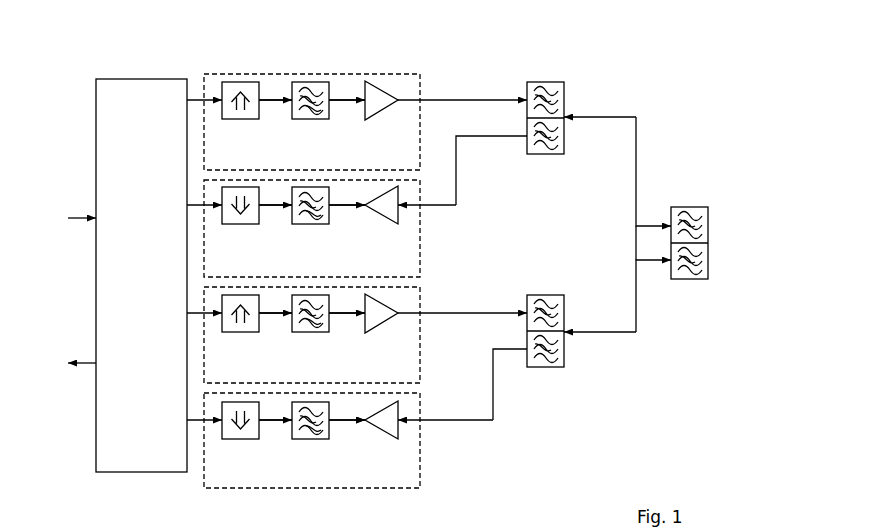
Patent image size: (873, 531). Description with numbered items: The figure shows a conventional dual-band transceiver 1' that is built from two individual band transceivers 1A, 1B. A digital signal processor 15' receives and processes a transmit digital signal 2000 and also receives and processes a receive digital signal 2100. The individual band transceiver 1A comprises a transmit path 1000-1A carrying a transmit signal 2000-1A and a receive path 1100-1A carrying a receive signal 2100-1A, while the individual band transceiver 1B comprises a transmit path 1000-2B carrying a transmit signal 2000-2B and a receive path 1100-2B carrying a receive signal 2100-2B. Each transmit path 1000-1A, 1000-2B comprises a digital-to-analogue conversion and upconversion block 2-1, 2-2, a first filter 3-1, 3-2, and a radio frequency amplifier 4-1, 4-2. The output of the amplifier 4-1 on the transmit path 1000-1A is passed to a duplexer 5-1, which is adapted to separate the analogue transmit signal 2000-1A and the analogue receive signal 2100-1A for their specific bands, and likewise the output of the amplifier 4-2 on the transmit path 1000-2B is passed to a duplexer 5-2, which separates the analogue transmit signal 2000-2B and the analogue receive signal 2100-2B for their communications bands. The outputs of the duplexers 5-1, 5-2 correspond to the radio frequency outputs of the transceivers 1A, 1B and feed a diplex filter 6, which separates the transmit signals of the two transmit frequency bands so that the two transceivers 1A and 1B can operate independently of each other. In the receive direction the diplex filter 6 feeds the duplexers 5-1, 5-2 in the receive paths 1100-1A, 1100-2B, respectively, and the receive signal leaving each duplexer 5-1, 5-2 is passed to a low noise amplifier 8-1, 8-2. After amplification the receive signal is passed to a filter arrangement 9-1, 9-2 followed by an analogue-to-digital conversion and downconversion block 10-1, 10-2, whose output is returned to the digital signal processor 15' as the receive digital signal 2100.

The dual-band transceiver 1' is at (127, 237).
The digital signal processor 15' is at (141, 275).
The individual band transceiver 1A is at (585, 62).
The individual band transceiver 1B is at (680, 430).
The digital-to-analogue conversion and upconversion block 2-1 is at (233, 82).
The first filter 3-1 is at (309, 82).
The radio frequency amplifier 4-1 is at (378, 90).
The duplexer 5-1 is at (560, 159).
The low noise amplifier 8-1 is at (390, 222).
The filter arrangement 9-1 is at (318, 224).
The analogue-to-digital conversion and downconversion block 10-1 is at (243, 224).
The digital-to-analogue conversion and upconversion block 2-2 is at (243, 332).
The first filter 3-2 is at (310, 332).
The radio frequency amplifier 4-2 is at (390, 318).
The duplexer 5-2 is at (560, 374).
The low noise amplifier 8-2 is at (390, 438).
The filter arrangement 9-2 is at (318, 438).
The analogue-to-digital conversion and downconversion block 10-2 is at (250, 438).
The diplex filter 6 is at (712, 250).
The transmit digital signal 2000 is at (57, 218).
The receive digital signal 2100 is at (57, 362).
The transmit signal 2000-1A is at (197, 98).
The transmit path 1000-1A is at (460, 100).
The receive path 1100-1A is at (457, 157).
The receive signal 2100-1A is at (636, 157).
The transmit signal 2000-2B is at (416, 315).
The transmit path 1000-2B is at (490, 313).
The receive path 1100-2B is at (495, 413).
The receive signal 2100-2B is at (637, 326).